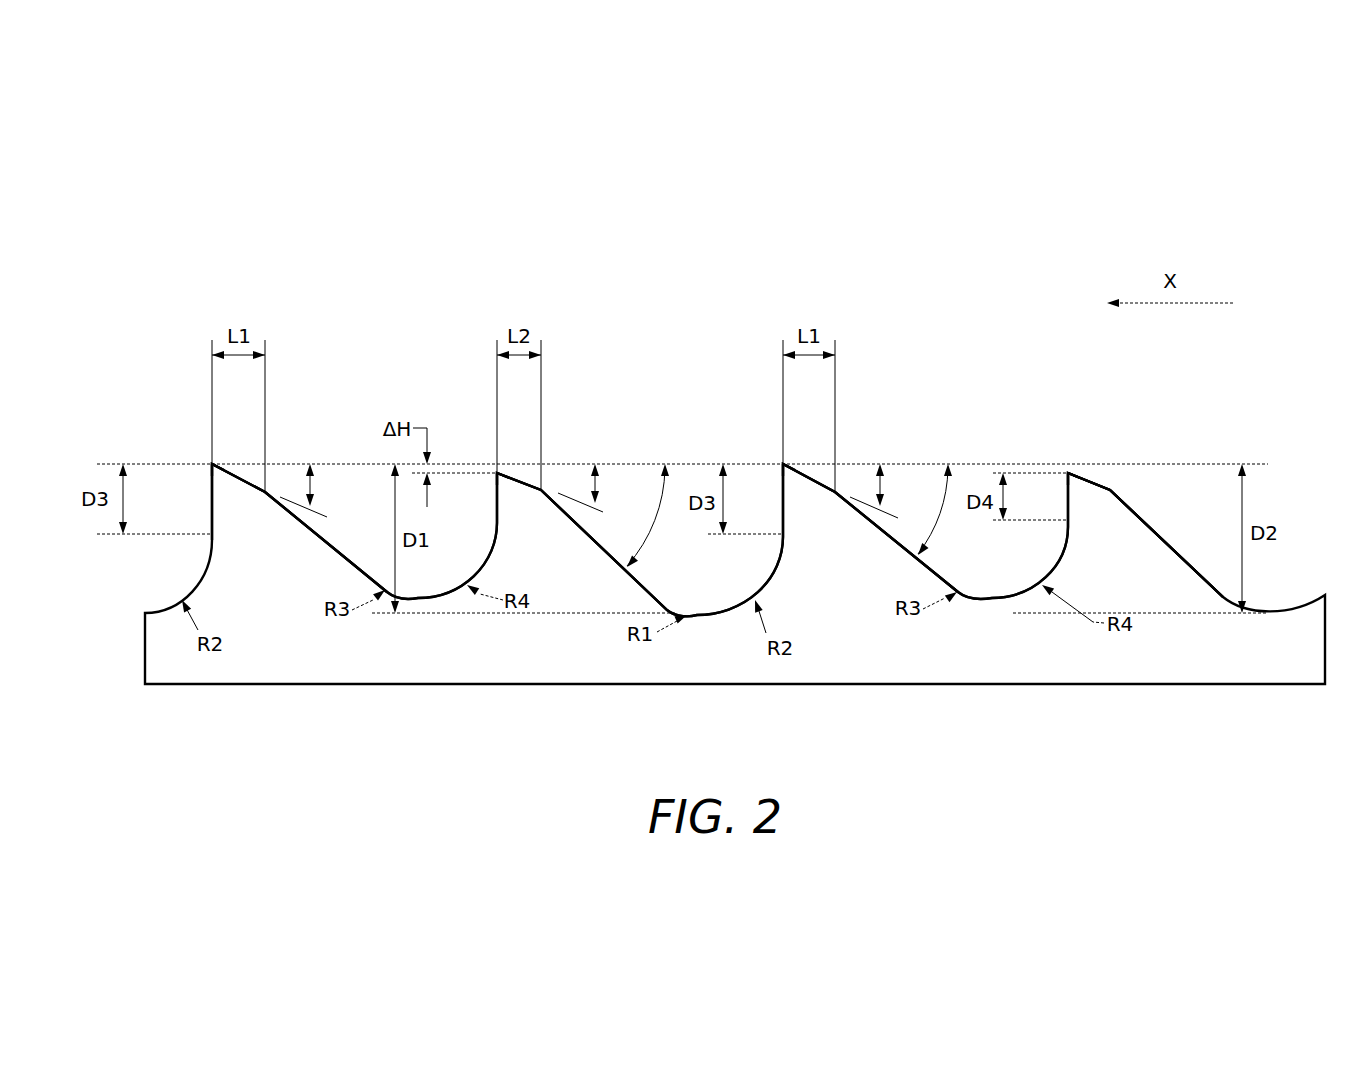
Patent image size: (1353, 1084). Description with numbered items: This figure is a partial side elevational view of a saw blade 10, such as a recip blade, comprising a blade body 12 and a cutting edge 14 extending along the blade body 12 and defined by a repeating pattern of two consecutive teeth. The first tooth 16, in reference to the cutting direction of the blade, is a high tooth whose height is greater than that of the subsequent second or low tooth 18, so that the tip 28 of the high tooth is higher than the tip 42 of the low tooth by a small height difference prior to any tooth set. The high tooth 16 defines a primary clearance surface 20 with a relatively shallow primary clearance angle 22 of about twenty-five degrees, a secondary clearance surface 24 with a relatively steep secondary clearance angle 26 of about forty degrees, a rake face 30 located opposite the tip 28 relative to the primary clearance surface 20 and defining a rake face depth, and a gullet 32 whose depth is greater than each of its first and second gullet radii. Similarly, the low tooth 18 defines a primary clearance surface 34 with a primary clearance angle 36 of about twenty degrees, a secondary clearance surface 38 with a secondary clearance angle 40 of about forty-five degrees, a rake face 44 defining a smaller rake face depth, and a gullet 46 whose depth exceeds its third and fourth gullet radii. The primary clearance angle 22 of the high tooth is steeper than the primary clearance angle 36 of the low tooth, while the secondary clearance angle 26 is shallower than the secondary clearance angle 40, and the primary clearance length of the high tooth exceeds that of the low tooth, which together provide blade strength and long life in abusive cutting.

The saw blade 10 is at (861, 224).
The blade body 12 is at (830, 676).
The cutting edge 14 is at (1116, 438).
The first tooth 16 is at (828, 547).
The second tooth 18 is at (1122, 567).
The primary clearance surface 20 is at (809, 478).
The primary clearance angle 22 is at (880, 492).
The secondary clearance surface 24 is at (894, 540).
The secondary clearance angle 26 is at (935, 526).
The tip 28 is at (781, 463).
The rake face 30 is at (782, 503).
The gullet 32 is at (700, 617).
The primary clearance surface 34 is at (1094, 481).
The primary clearance angle 36 is at (597, 492).
The secondary clearance surface 38 is at (1147, 523).
The secondary clearance angle 40 is at (650, 531).
The tip 42 is at (1066, 473).
The rake face 44 is at (1067, 500).
The gullet 46 is at (990, 600).